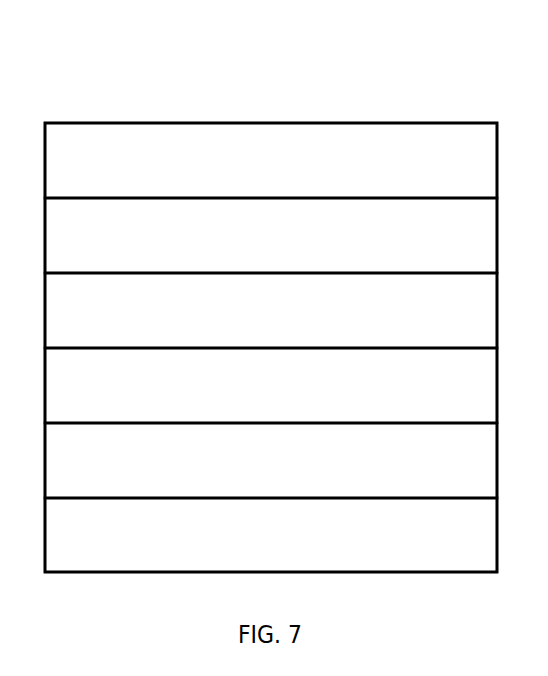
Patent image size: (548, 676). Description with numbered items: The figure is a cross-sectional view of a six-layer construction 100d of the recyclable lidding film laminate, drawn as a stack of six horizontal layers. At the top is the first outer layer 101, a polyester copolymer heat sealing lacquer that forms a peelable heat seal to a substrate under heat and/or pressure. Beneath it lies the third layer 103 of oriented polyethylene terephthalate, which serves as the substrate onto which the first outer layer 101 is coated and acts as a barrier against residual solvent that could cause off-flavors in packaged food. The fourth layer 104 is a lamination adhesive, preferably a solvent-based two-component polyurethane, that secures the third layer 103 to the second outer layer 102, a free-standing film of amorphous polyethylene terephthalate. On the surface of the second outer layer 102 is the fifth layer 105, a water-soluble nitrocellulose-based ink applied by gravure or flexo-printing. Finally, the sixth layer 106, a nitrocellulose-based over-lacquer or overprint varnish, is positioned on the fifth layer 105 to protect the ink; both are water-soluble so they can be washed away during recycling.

The six-layer construction 100d is at (281, 78).
The first outer layer 101 is at (271, 160).
The third layer 103 is at (271, 235).
The fourth layer 104 is at (271, 310).
The second outer layer 102 is at (271, 385).
The fifth layer 105 is at (271, 460).
The sixth layer 106 is at (271, 535).